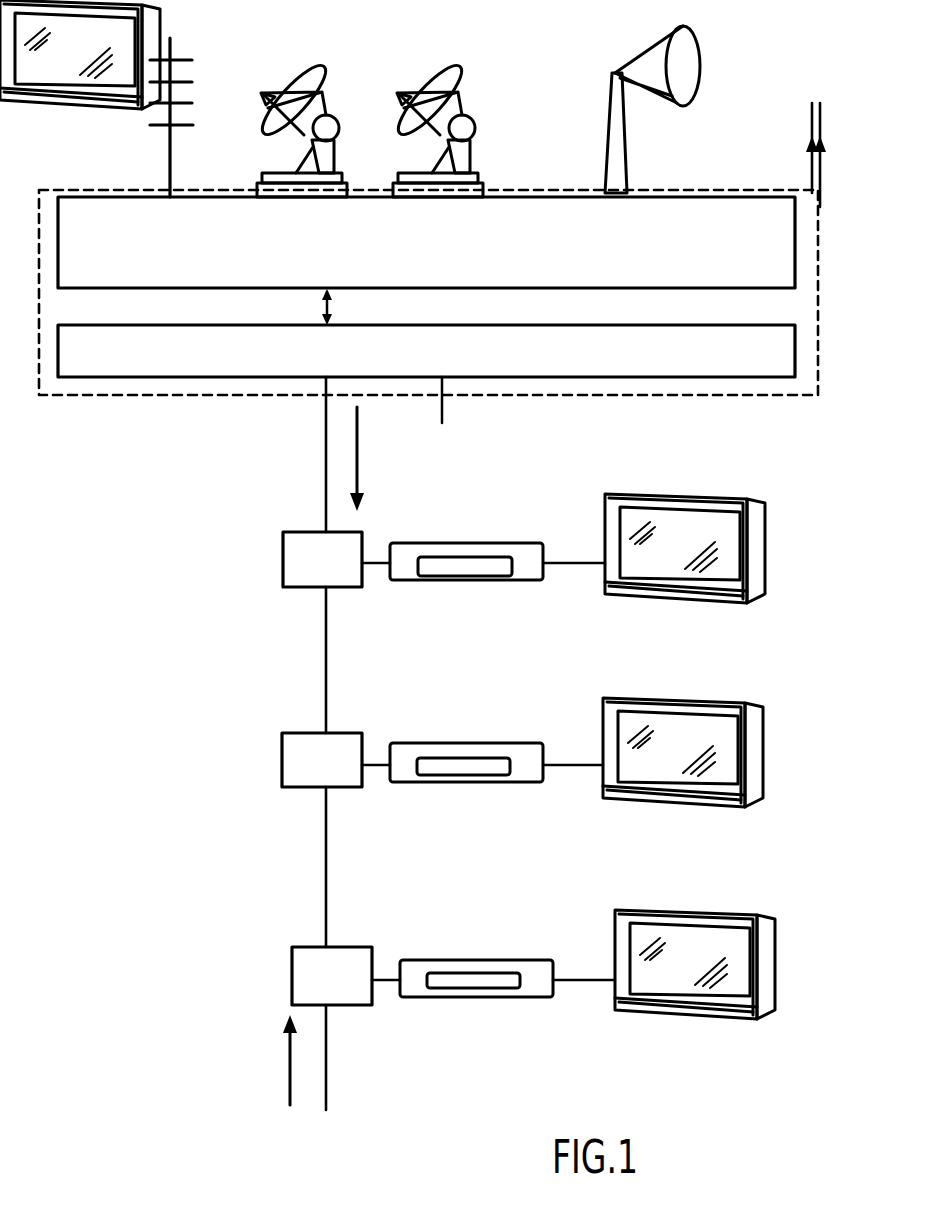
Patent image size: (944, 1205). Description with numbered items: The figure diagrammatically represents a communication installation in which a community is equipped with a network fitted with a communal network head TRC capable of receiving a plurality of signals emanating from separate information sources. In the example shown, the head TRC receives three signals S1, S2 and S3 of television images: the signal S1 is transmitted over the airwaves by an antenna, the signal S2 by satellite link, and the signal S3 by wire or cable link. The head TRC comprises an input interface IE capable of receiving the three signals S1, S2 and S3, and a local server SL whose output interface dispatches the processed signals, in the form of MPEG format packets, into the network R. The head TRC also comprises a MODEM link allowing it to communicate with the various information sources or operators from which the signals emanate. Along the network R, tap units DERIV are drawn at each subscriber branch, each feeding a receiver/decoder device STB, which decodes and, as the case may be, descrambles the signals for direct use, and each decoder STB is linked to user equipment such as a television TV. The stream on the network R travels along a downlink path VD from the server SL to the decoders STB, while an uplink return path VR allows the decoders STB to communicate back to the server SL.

The television signal transmitted over the airwaves S1 is at (117, 122).
The television signal transmitted by satellite link S2 is at (502, 122).
The television signal transmitted by cable link S3 is at (725, 124).
The MODEM link MODEM is at (812, 125).
The input interface IE is at (100, 217).
The communal network head TRC is at (117, 395).
The local server SL is at (218, 360).
The network R is at (326, 462).
The downlink path VD is at (358, 450).
The uplink return path VR is at (290, 1076).
The tap / derivation unit DERIV is at (283, 555).
The receiver/decoder device STB is at (478, 543).
The television TV is at (718, 497).